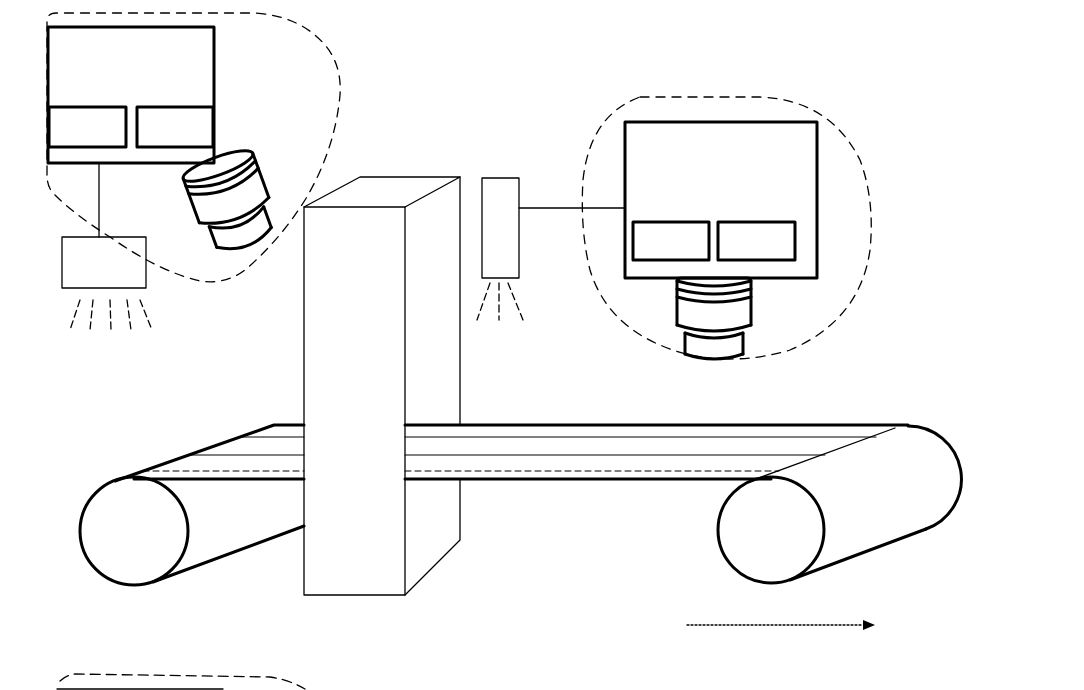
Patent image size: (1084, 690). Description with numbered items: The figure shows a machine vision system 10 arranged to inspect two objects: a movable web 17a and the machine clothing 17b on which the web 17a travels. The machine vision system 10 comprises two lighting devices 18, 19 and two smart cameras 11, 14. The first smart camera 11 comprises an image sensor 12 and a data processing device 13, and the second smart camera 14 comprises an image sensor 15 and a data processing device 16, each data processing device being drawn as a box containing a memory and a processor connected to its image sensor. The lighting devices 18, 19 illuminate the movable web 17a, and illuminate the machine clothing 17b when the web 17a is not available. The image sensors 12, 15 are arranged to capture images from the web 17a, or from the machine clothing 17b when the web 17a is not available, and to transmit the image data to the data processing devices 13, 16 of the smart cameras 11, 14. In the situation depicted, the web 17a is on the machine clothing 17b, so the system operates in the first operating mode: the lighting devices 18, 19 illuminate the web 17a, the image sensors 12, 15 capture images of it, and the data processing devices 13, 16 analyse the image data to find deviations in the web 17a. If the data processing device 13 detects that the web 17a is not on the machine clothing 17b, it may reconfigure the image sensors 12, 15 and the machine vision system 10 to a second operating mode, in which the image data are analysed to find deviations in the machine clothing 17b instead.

The machine vision system 10 is at (790, 77).
The smart camera 11 is at (853, 153).
The image sensor 12 is at (673, 313).
The data processing device 13 is at (633, 178).
The smart camera 14 is at (342, 74).
The image sensor 15 is at (258, 163).
The data processing device 16 is at (214, 95).
The web 17a is at (612, 433).
The machine clothing 17b is at (935, 475).
The lighting device 18 is at (551, 249).
The lighting device 19 is at (107, 246).